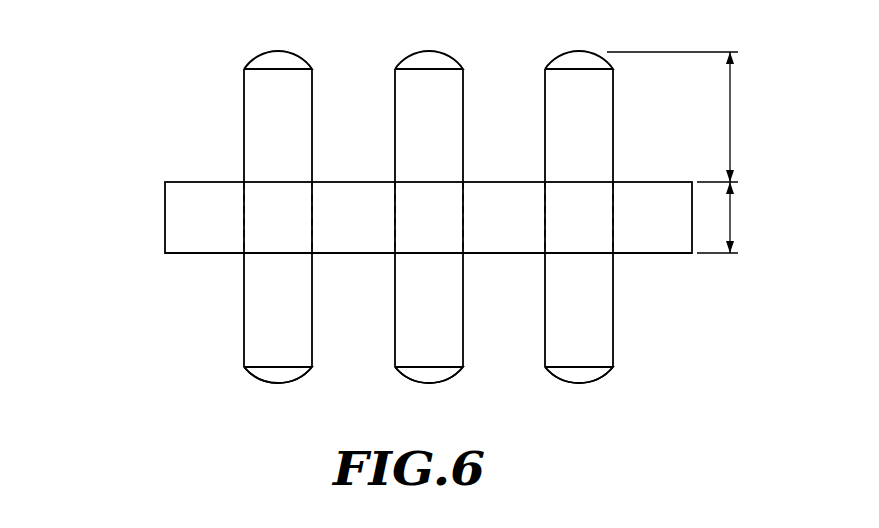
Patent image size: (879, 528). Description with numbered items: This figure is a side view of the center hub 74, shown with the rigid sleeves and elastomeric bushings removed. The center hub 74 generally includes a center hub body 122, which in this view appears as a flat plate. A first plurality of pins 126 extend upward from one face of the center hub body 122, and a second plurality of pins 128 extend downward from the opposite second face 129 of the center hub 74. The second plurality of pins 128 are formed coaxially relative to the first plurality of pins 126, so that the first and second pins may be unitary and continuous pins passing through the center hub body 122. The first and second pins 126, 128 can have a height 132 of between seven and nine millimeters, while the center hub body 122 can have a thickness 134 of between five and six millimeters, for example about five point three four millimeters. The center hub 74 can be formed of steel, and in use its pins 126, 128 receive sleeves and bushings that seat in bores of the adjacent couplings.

The center hub 74 is at (141, 57).
The center hub body 122 is at (183, 218).
The first plurality of pins 126 is at (268, 58).
The second plurality of pins 128 is at (253, 352).
The second face 129 is at (204, 254).
The height 132 is at (733, 118).
The thickness 134 is at (733, 220).